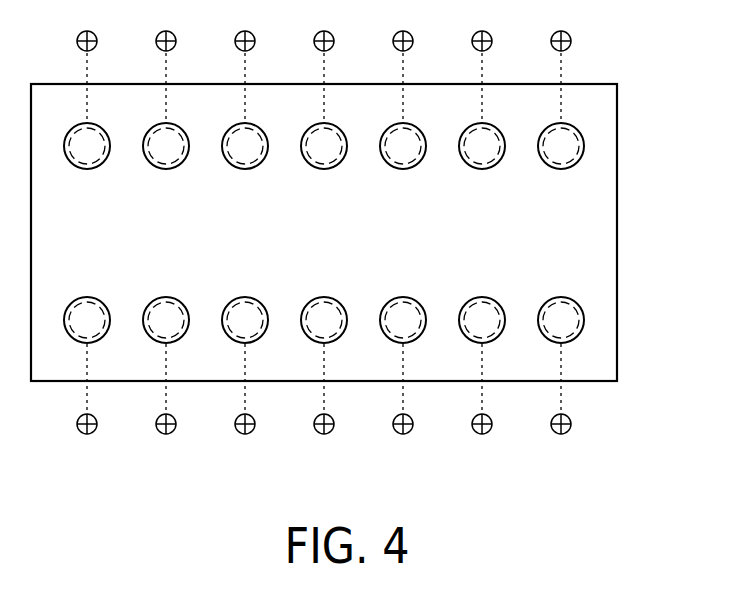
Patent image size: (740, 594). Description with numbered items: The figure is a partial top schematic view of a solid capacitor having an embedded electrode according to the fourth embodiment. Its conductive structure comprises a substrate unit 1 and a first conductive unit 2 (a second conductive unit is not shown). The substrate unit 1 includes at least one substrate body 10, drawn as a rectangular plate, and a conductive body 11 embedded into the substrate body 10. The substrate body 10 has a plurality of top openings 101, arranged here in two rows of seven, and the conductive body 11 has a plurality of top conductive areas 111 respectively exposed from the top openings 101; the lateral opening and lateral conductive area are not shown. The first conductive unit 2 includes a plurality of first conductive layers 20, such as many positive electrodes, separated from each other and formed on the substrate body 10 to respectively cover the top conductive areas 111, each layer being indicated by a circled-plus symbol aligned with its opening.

The substrate unit 1 is at (669, 99).
The substrate body 10 is at (593, 110).
The conductive body 11 is at (588, 175).
The top openings 101 is at (568, 170).
The top conductive areas 111 is at (541, 152).
The first conductive unit 2 is at (517, 22).
The first conductive layers 20 is at (553, 125).